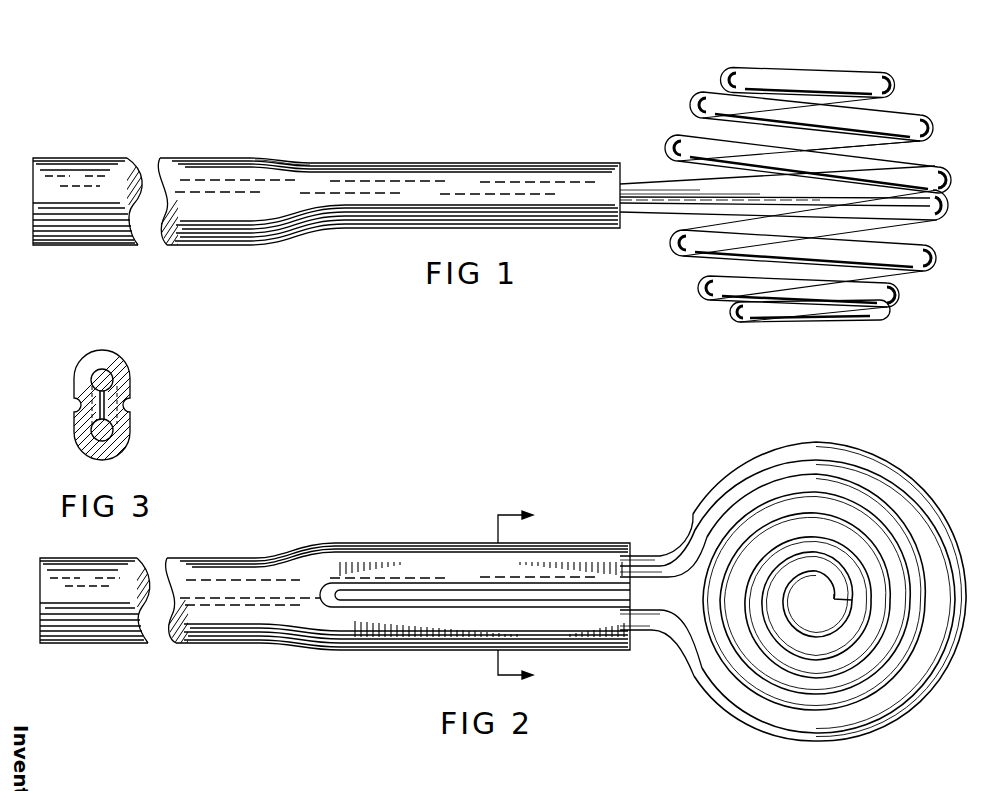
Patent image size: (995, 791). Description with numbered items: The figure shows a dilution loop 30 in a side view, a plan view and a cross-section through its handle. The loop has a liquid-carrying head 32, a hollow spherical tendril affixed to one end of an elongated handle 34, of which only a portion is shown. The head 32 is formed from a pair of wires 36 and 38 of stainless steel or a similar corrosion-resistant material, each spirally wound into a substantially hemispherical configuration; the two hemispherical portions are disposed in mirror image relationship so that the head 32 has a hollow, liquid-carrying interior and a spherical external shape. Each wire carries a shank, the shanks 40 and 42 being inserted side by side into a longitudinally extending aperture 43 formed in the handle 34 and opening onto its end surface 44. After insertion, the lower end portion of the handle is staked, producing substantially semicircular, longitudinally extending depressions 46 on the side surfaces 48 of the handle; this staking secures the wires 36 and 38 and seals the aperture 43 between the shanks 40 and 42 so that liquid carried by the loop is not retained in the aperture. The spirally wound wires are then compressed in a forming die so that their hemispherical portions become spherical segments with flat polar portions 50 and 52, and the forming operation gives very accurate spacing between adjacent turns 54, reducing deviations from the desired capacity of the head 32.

In FIG. 1, the dilution loop 30 is at (503, 158).
In FIG. 2, the dilution loop 30 is at (335, 597).
In FIG. 1, the liquid-carrying head 32 is at (813, 194).
In FIG. 1, the elongated handle 34 is at (262, 162).
In FIG. 1, the wire 36 is at (912, 125).
In FIG. 1, the wire 38 is at (933, 263).
In FIG. 2, the wire 38 is at (928, 665).
In FIG. 2, the shank 40 is at (648, 562).
In FIG. 1, the shank 42 is at (658, 190).
In FIG. 2, the shank 42 is at (651, 624).
In FIG. 3, the aperture 43 is at (97, 405).
In FIG. 1, the end surface 44 is at (621, 214).
In FIG. 2, the end surface 44 is at (622, 595).
In FIG. 3, the depressions 46 is at (80, 401).
In FIG. 3, the side surfaces 48 is at (75, 375).
In FIG. 1, the flat polar portion 50 is at (840, 68).
In FIG. 1, the flat polar portion 52 is at (848, 320).
In FIG. 1, the adjacent turns 54 is at (920, 168).